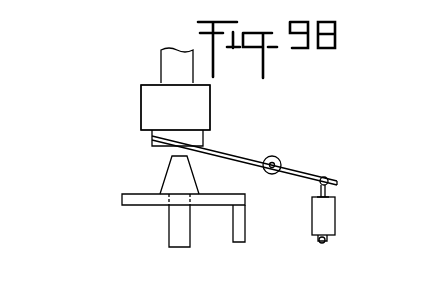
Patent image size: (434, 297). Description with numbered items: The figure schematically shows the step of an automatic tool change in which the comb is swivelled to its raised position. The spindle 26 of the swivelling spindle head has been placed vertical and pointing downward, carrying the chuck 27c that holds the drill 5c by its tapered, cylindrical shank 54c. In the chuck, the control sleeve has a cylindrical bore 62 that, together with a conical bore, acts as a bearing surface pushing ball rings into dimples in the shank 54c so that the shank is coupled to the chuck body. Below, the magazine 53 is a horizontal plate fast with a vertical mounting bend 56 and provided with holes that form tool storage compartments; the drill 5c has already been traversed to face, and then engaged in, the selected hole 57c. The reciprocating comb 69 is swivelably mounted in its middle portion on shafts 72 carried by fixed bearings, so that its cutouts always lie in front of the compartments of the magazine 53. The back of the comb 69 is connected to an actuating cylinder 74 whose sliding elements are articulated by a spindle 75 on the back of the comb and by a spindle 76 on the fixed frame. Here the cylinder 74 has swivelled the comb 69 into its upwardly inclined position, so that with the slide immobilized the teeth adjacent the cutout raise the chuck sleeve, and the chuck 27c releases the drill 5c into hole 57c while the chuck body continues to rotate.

The spindle 26 is at (165, 57).
The chuck 27c is at (135, 106).
The cylindrical bore 62 is at (140, 120).
The reciprocating comb 69 is at (235, 153).
The shaft 72 is at (280, 162).
The spindle 75 is at (327, 178).
The cylinder 74 is at (326, 218).
The spindle 76 is at (328, 240).
The shank 54c is at (170, 182).
The magazine 53 is at (126, 201).
The vertical mounting bend 56 is at (242, 224).
The drill 5c is at (187, 232).
The hole 57c is at (167, 200).